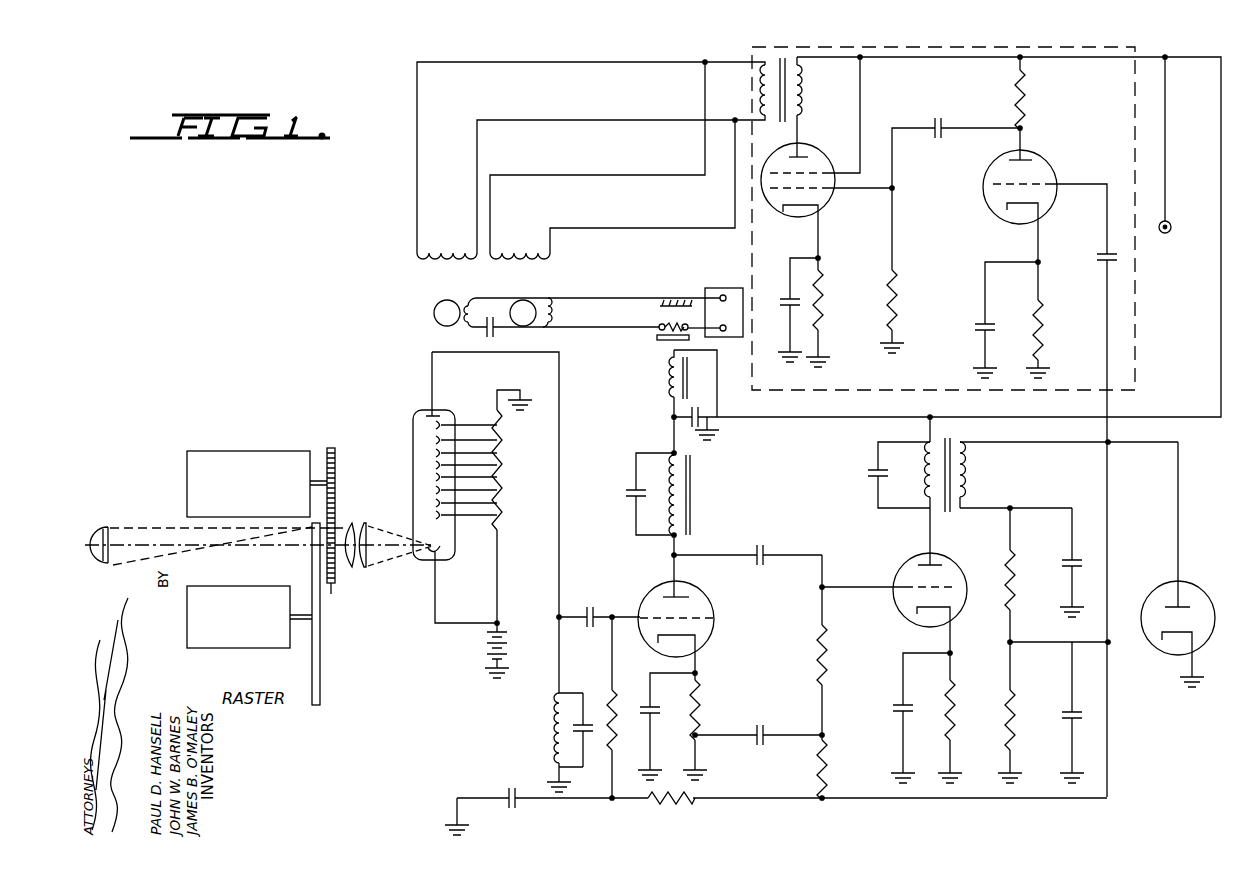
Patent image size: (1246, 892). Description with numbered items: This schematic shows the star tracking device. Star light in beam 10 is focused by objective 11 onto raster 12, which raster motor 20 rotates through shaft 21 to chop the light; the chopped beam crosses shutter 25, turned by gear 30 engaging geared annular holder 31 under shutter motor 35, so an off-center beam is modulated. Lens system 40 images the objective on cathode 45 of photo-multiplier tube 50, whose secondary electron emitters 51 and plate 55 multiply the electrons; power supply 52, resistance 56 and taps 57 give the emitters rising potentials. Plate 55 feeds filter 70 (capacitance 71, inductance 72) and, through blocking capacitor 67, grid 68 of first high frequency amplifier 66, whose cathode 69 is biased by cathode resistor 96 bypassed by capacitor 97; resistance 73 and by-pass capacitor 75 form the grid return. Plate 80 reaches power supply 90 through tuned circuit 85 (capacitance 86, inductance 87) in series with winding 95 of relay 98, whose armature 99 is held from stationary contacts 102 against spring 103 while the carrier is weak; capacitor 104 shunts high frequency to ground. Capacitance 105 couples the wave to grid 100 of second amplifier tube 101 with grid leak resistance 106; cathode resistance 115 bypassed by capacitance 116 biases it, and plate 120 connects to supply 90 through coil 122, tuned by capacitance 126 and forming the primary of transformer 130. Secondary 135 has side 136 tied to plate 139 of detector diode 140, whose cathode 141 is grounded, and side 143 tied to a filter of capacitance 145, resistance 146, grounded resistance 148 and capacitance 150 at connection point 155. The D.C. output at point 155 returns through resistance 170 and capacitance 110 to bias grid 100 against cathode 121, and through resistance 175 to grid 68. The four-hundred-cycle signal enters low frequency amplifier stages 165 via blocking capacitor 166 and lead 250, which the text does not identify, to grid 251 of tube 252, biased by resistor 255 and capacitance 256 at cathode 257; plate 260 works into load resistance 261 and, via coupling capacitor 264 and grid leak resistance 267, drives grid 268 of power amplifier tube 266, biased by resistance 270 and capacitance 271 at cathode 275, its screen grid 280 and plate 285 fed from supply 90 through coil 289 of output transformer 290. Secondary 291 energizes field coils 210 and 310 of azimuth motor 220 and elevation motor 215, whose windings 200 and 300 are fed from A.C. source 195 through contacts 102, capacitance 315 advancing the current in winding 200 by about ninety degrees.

The light beam 10 is at (148, 537).
The objective 11 is at (111, 577).
The raster 12 is at (322, 690).
The raster motor 20 is at (246, 589).
The shaft 21 is at (293, 608).
The shutter 25 is at (357, 528).
The gear 30 is at (337, 465).
The geared annular holder 31 is at (337, 600).
The shutter motor 35 is at (302, 454).
The lens system 40 is at (362, 582).
The cathode 45 is at (428, 556).
The photo-multiplier tube 50 is at (413, 410).
The secondary electron emitters 51 is at (442, 426).
The photo-multiplier power supply 52 is at (488, 657).
The plate 55 is at (438, 412).
The resistance 56 is at (503, 480).
The taps 57 is at (470, 520).
The first high frequency amplifier tube 66 is at (708, 606).
The blocking capacitor 67 is at (600, 612).
The grid 68 is at (708, 618).
The cathode 69 is at (703, 636).
The filter 70 is at (562, 700).
The capacitance 71 is at (587, 735).
The inductance 72 is at (555, 729).
The grid leak resistance 73 is at (618, 732).
The by-pass capacitor 75 is at (520, 789).
The plate 80 is at (688, 602).
The parallel tuned circuit 85 is at (653, 461).
The capacitance 86 is at (630, 496).
The inductance 87 is at (698, 496).
The power supply 90 is at (1167, 234).
The relay winding 95 is at (658, 399).
The cathode resistor 96 is at (702, 705).
The capacitor 97 is at (660, 716).
The relay 98 is at (660, 390).
The armature 99 is at (657, 352).
The grid 100 is at (906, 583).
The second high frequency amplifier tube 101 is at (899, 560).
The stationary contacts 102 is at (690, 316).
The spring 103 is at (660, 326).
The by-passing capacitor 104 is at (703, 418).
The coupling capacitance 105 is at (773, 541).
The grid leak resistance 106 is at (830, 652).
The capacitance 110 is at (760, 746).
The cathode resistance 115 is at (946, 728).
The capacitance 116 is at (898, 707).
The plate 120 is at (940, 563).
The cathode 121 is at (920, 616).
The coil 122 is at (921, 477).
The capacitance 126 is at (870, 473).
The transformer 130 is at (954, 440).
The secondary winding 135 is at (978, 473).
The side of secondary 136 is at (1011, 442).
The plate 139 is at (1186, 603).
The detector diode 140 is at (1162, 584).
The cathode 141 is at (1177, 640).
The terminal of secondary 143 is at (982, 507).
The capacitance 145 is at (1069, 564).
The resistance 146 is at (1018, 586).
The grounded resistance 148 is at (998, 720).
The filtering capacitance 150 is at (1063, 722).
The connection point 155 is at (1069, 640).
The low frequency amplifier stages 165 is at (1146, 333).
The blocking capacitor 166 is at (1098, 256).
The resistance 170 is at (830, 762).
The resistance 175 is at (655, 812).
The A.C. power source 195 is at (737, 281).
The winding 200 is at (482, 304).
The field coil 210 is at (456, 246).
The elevation motor 215 is at (542, 300).
The azimuth motor 220 is at (449, 300).
The output lead 250 is at (1105, 297).
The grid 251 is at (1045, 196).
The low frequency amplifier tube 252 is at (1058, 170).
The resistor 255 is at (1044, 322).
The capacitance 256 is at (978, 322).
The cathode 257 is at (1022, 218).
The plate 260 is at (1032, 159).
The load resistance 261 is at (1026, 94).
The coupling capacitor 264 is at (950, 110).
The power amplifier tube 266 is at (824, 213).
The grid leak resistance 267 is at (898, 296).
The grid 268 is at (822, 192).
The resistance 270 is at (825, 322).
The capacitance 271 is at (784, 302).
The cathode 275 is at (802, 218).
The screen grid 280 is at (826, 178).
The plate 285 is at (808, 152).
The coil 289 is at (803, 105).
The output transformer 290 is at (775, 119).
The secondary 291 is at (758, 89).
The second winding 300 is at (565, 322).
The field winding 310 is at (531, 246).
The capacitance 315 is at (487, 336).